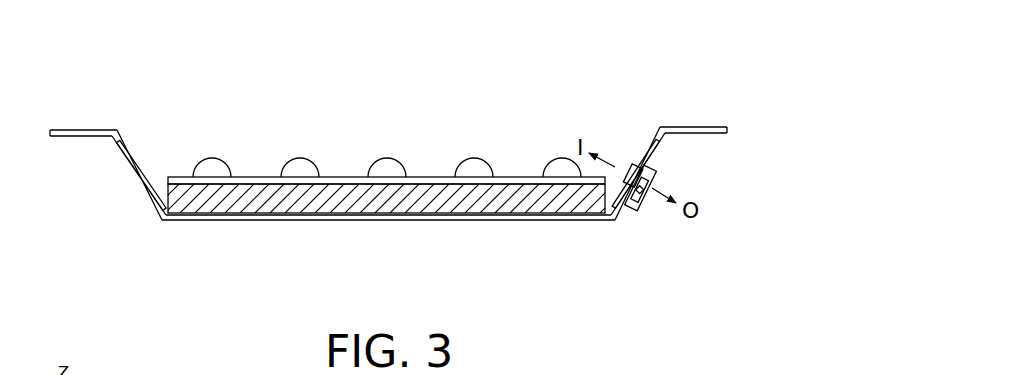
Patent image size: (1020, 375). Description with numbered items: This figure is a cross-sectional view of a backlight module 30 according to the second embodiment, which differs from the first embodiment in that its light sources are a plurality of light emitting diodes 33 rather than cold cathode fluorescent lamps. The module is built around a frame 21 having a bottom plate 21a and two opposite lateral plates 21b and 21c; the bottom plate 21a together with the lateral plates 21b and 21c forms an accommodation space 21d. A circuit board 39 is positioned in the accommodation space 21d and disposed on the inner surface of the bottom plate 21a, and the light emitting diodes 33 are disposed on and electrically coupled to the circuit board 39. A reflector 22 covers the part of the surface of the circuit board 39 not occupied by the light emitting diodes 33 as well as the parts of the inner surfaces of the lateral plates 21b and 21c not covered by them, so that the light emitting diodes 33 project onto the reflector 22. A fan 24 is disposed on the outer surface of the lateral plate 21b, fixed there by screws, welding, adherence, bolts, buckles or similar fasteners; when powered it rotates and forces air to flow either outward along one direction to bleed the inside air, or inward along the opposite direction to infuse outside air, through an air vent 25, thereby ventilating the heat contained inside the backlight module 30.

The backlight module 30 is at (752, 51).
The frame 21 is at (432, 167).
The bottom plate 21a is at (412, 217).
The lateral plate 21b is at (657, 140).
The lateral plate 21c is at (140, 178).
The accommodation space 21d is at (302, 140).
The reflector 22 is at (148, 170).
The fan 24 is at (637, 212).
The air vent 25 is at (632, 173).
The light emitting diodes 33 is at (385, 167).
The circuit board 39 is at (473, 203).